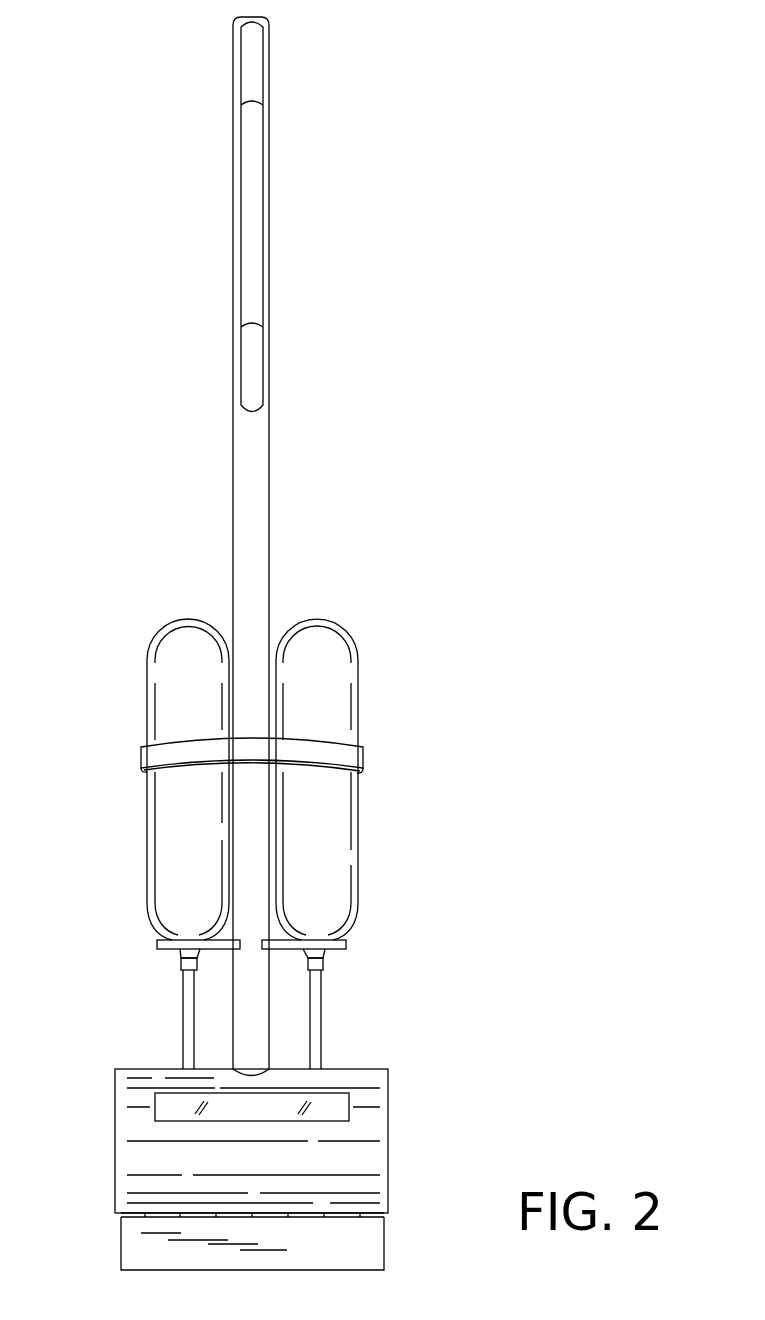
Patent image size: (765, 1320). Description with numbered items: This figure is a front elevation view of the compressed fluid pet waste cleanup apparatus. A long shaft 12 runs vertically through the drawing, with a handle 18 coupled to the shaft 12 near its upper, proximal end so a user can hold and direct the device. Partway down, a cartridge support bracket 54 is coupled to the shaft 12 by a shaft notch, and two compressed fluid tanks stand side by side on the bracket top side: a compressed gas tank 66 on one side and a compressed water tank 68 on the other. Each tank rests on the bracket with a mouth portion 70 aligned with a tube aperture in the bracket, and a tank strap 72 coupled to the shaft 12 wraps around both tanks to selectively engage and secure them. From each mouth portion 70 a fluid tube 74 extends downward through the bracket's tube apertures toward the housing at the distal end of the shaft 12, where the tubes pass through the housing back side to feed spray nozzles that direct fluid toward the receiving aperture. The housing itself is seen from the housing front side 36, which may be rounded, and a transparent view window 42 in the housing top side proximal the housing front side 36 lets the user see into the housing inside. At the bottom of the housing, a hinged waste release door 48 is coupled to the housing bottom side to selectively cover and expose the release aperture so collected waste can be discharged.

The shaft 12 is at (249, 433).
The handle 18 is at (253, 238).
The housing front side 36 is at (358, 1183).
The transparent view window 42 is at (330, 1105).
The hinged waste release door 48 is at (348, 1237).
The cartridge support bracket 54 is at (347, 945).
The compressed gas tank 66 is at (346, 858).
The compressed water tank 68 is at (153, 845).
The mouth portion 70 is at (178, 960).
The tank strap 72 is at (337, 757).
The fluid tube 74 is at (315, 1023).